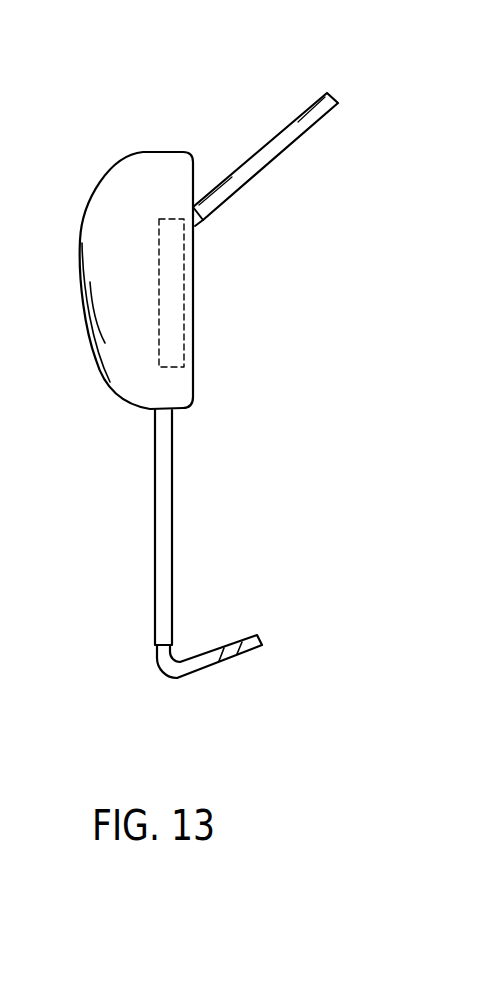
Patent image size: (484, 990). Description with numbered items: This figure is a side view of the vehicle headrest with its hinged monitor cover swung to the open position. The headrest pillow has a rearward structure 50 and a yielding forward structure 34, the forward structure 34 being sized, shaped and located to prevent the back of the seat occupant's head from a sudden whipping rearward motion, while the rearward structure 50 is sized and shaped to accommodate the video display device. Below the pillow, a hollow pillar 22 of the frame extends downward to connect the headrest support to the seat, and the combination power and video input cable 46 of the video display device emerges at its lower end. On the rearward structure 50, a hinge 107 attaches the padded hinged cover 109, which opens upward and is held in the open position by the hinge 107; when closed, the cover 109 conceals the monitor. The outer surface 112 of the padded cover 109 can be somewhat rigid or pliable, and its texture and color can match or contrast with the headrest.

The hollow pillar 22 is at (173, 528).
The yielding forward structure 34 is at (78, 267).
The combination power and video input cable 46 is at (200, 669).
The rearward structure 50 is at (194, 178).
The hinge 107 is at (194, 225).
The hinged cover 109 is at (313, 95).
The outer surface 112 is at (283, 127).